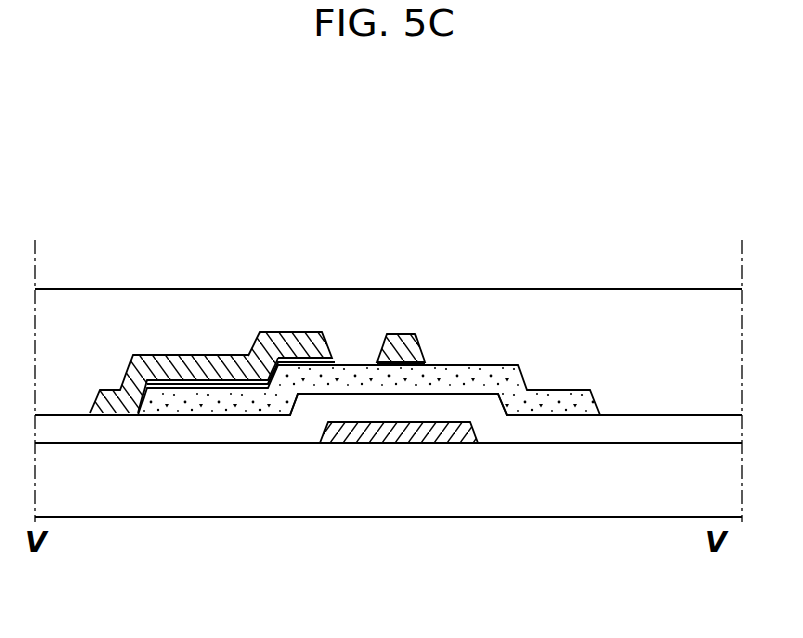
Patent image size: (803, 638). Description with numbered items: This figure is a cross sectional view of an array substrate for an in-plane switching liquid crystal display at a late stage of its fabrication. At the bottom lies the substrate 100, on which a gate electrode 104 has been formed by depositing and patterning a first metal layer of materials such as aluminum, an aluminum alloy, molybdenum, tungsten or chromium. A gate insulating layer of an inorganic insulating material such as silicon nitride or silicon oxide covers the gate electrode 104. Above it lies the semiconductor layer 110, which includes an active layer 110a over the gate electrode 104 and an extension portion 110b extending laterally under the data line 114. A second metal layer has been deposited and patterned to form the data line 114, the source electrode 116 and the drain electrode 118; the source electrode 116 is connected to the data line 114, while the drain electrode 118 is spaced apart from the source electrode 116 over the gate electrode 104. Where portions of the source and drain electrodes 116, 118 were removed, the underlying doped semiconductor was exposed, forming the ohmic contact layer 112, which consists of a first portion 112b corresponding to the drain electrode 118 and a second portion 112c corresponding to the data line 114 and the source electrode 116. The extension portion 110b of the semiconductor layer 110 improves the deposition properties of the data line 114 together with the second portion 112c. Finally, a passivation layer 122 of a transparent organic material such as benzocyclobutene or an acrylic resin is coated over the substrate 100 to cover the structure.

The substrate 100 is at (645, 480).
The gate electrode 104 is at (395, 437).
The semiconductor layer 110 is at (388, 500).
The active layer 110a is at (360, 385).
The extension portion 110b is at (190, 400).
The ohmic contact layer 112 is at (289, 257).
The first portion 112b is at (404, 269).
The second portion 112c is at (208, 385).
The data line 114 is at (150, 356).
The source electrode 116 is at (295, 334).
The drain electrode 118 is at (390, 334).
The passivation layer 122 is at (652, 289).